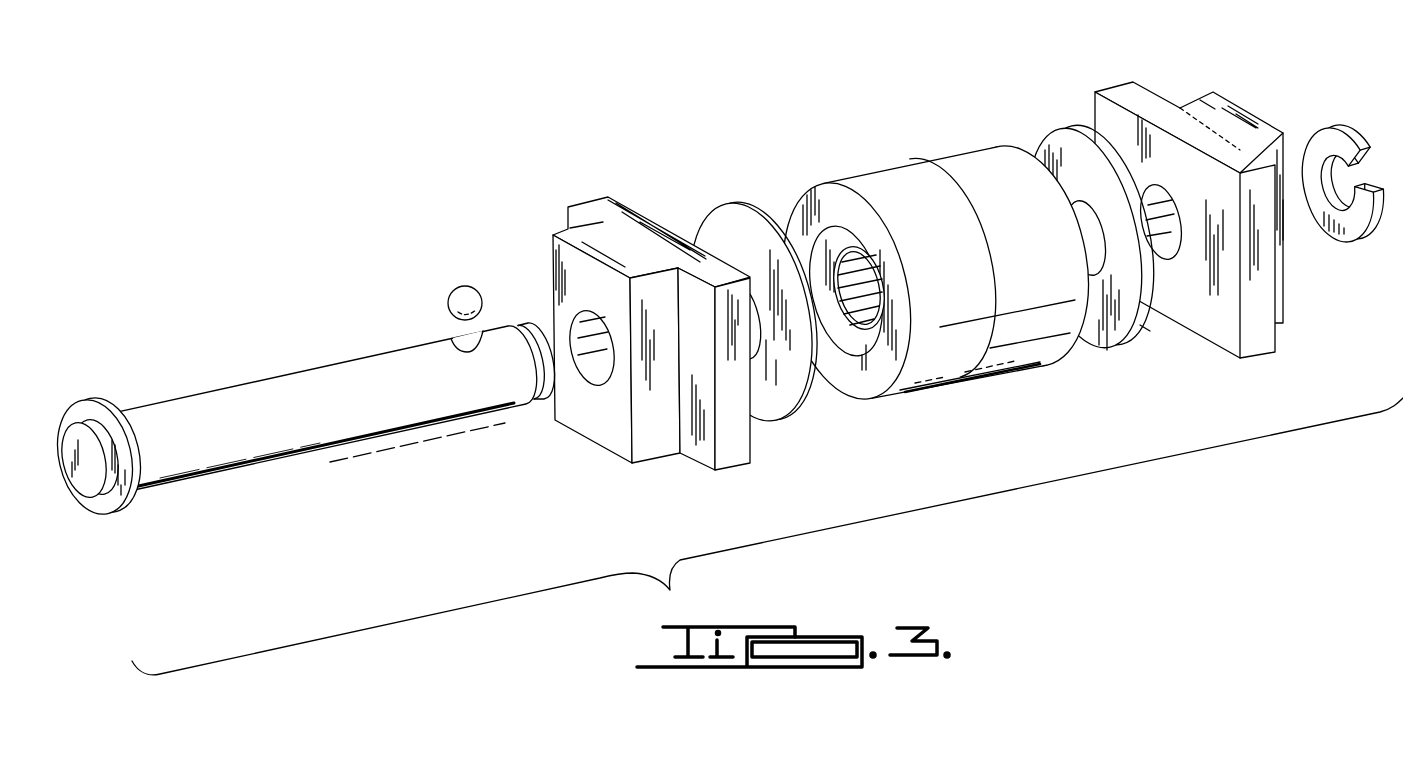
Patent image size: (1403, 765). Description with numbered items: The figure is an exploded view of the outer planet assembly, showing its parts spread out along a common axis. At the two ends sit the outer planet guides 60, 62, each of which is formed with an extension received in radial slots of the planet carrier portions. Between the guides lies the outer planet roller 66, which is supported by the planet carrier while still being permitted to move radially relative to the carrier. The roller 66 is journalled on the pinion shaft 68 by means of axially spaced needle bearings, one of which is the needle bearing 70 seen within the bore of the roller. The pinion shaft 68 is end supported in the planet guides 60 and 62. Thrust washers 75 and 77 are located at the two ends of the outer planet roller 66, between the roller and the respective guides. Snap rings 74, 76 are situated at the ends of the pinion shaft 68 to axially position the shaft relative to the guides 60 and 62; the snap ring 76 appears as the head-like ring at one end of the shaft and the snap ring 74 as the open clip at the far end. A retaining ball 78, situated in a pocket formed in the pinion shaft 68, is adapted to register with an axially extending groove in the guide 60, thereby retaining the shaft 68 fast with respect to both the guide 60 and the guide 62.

The outer planet guide 60 is at (1152, 97).
The outer planet guide 62 is at (598, 426).
The outer planet roller 66 is at (890, 178).
The pinion shaft 68 is at (241, 395).
The needle bearing 70 is at (871, 291).
The snap ring 74 is at (1335, 140).
The thrust washer 75 is at (725, 222).
The snap ring 76 is at (92, 408).
The thrust washer 77 is at (1072, 140).
The retaining ball 78 is at (470, 290).